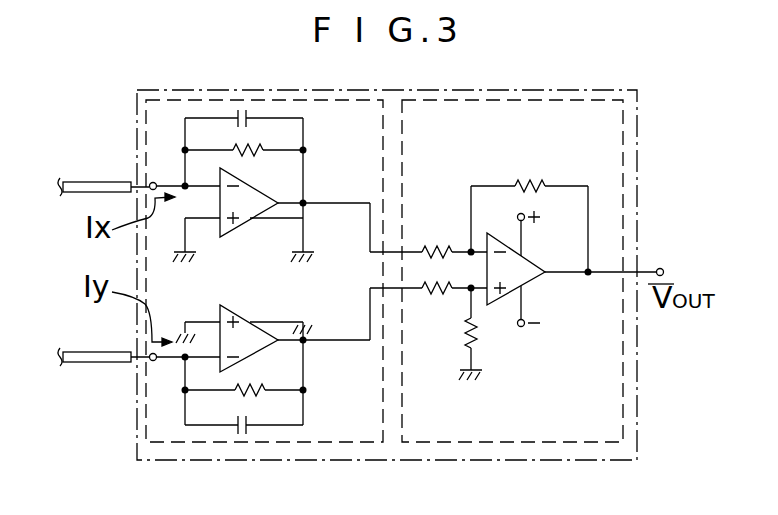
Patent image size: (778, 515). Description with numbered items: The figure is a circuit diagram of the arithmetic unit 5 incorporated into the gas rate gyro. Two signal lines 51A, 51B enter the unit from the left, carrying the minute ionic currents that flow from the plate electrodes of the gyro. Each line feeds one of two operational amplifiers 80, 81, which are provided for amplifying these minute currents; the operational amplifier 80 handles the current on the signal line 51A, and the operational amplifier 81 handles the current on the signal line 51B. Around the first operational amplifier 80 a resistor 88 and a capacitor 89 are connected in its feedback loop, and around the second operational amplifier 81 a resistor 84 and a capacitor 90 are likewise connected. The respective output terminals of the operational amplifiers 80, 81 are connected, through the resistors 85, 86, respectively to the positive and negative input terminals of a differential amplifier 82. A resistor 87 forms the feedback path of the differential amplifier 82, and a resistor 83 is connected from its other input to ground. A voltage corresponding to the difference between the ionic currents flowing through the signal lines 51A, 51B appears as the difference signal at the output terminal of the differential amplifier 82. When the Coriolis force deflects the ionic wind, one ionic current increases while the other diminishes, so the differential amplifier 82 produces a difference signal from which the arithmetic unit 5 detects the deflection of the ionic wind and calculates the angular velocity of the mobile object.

The arithmetic unit 5 is at (137, 454).
The signal line 51A is at (84, 181).
The signal line 51B is at (84, 352).
The operational amplifier 80 is at (252, 207).
The operational amplifier 81 is at (241, 320).
The differential amplifier 82 is at (522, 265).
The resistor 83 is at (477, 333).
The resistor 84 is at (243, 388).
The resistor 85 is at (437, 248).
The resistor 86 is at (435, 293).
The resistor 87 is at (530, 182).
The resistor 88 is at (260, 142).
The capacitor 89 is at (238, 114).
The capacitor 90 is at (250, 415).